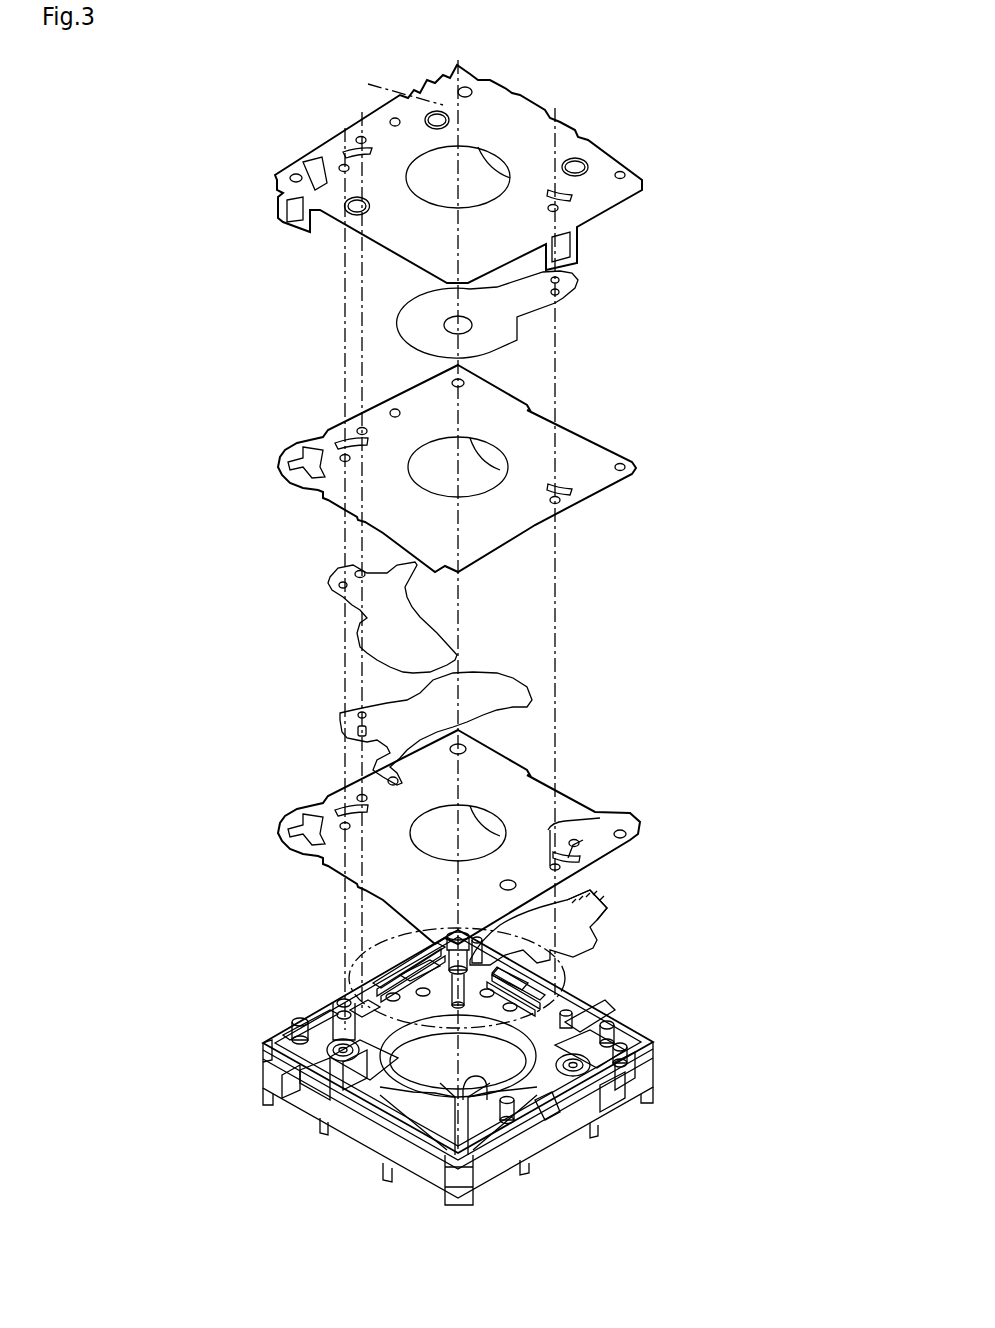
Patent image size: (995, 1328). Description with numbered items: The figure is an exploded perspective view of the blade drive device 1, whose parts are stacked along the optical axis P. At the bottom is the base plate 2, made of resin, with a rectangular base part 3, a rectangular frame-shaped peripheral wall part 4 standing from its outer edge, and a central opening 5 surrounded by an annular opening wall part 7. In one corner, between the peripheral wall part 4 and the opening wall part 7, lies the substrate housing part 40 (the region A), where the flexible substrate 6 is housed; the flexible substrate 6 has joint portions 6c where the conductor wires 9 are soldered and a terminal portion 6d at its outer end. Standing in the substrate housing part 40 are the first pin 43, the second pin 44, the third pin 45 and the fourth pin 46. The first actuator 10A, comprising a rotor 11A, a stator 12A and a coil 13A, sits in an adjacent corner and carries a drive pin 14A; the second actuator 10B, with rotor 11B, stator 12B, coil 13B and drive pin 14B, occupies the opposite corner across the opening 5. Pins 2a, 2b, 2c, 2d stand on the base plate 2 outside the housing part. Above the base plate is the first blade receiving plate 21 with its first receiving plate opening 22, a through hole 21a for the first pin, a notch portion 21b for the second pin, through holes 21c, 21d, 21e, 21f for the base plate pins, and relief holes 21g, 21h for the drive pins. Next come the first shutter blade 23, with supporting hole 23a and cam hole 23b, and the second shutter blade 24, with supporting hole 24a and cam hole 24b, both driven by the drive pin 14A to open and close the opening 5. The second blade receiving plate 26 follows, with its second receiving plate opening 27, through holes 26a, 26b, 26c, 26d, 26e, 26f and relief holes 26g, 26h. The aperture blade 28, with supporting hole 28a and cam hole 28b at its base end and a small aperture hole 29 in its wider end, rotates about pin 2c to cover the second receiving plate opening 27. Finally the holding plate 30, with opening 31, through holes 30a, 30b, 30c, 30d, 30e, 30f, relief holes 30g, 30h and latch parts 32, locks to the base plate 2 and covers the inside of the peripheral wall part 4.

The blade drive device 1 is at (226, 120).
The base plate 2 is at (250, 1066).
The pin 2a is at (327, 1043).
The pin 2b is at (357, 1017).
The pin 2c is at (550, 1120).
The pin 2d is at (617, 1090).
The base part 3 is at (507, 1123).
The peripheral wall part 4 is at (523, 1113).
The opening 5 is at (483, 1080).
The flexible substrate 6 is at (585, 948).
The joint portions 6c is at (430, 990).
The terminal portion 6d is at (603, 918).
The opening wall part 7 is at (437, 1087).
The conductor wires 9 is at (300, 1018).
The first actuator 10A is at (353, 1100).
The second actuator 10B is at (590, 1033).
The rotor 11A is at (360, 1078).
The rotor 11B is at (617, 1073).
The stator 12A is at (377, 1080).
The stator 12B is at (585, 1055).
The coil 13A is at (340, 1077).
The coil 13B is at (597, 1052).
The drive pin 14A is at (343, 1033).
The drive pin 14B is at (577, 1075).
The first blade receiving plate 21 is at (527, 777).
The through hole 21a is at (465, 753).
The notch portion 21b is at (390, 780).
The through hole 21c is at (313, 853).
The through hole 21d is at (360, 797).
The through hole 21e is at (580, 838).
The through hole 21f is at (620, 830).
The relief hole 21g is at (338, 807).
The relief hole 21h is at (557, 852).
The first receiving plate opening 22 is at (507, 830).
The first shutter blade 23 is at (413, 630).
The supporting hole 23a is at (340, 592).
The cam hole 23b is at (352, 568).
The second shutter blade 24 is at (503, 687).
The supporting hole 24a is at (360, 712).
The cam hole 24b is at (357, 728).
The second blade receiving plate 26 is at (507, 400).
The through hole 26a is at (450, 385).
The through hole 26b is at (393, 413).
The through hole 26c is at (323, 487).
The through hole 26d is at (360, 428).
The through hole 26e is at (560, 502).
The through hole 26f is at (595, 465).
The relief hole 26g is at (338, 440).
The relief hole 26h is at (555, 488).
The second receiving plate opening 27 is at (517, 457).
The aperture blade 28 is at (415, 315).
The supporting hole 28a is at (560, 296).
The cam hole 28b is at (560, 280).
The small aperture hole 29 is at (450, 322).
The holding plate 30 is at (547, 130).
The through hole 30a is at (465, 88).
The through hole 30b is at (393, 120).
The through hole 30c is at (337, 167).
The through hole 30d is at (360, 138).
The through hole 30e is at (557, 208).
The through hole 30f is at (620, 173).
The relief hole 30g is at (343, 150).
The relief hole 30h is at (568, 195).
The opening 31 is at (480, 170).
The latch parts 32 is at (277, 200).
The substrate housing part 40 is at (405, 945).
The first pin 43 is at (470, 945).
The second pin 44 is at (407, 1000).
The third pin 45 is at (543, 997).
The fourth pin 46 is at (485, 945).
The part A is at (560, 962).
The optical axis P is at (357, 87).